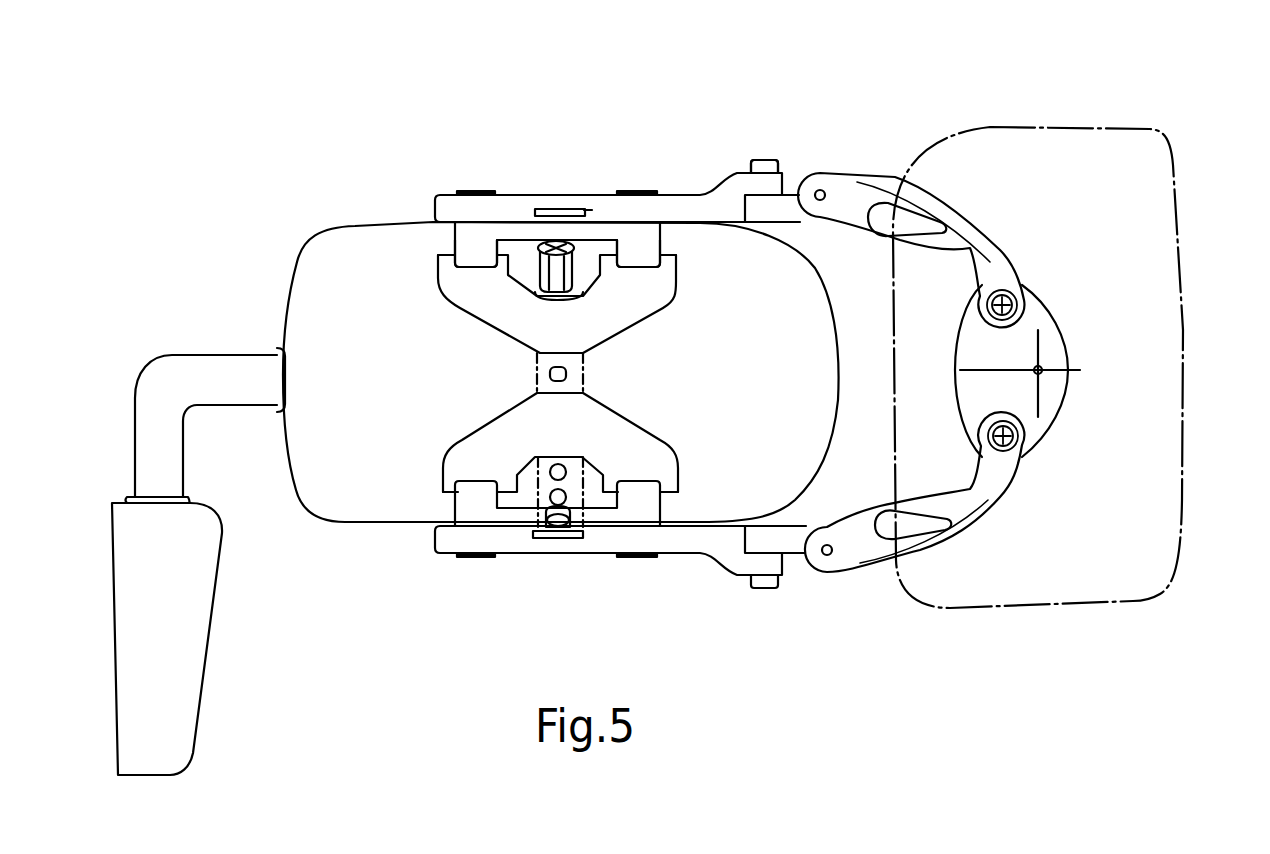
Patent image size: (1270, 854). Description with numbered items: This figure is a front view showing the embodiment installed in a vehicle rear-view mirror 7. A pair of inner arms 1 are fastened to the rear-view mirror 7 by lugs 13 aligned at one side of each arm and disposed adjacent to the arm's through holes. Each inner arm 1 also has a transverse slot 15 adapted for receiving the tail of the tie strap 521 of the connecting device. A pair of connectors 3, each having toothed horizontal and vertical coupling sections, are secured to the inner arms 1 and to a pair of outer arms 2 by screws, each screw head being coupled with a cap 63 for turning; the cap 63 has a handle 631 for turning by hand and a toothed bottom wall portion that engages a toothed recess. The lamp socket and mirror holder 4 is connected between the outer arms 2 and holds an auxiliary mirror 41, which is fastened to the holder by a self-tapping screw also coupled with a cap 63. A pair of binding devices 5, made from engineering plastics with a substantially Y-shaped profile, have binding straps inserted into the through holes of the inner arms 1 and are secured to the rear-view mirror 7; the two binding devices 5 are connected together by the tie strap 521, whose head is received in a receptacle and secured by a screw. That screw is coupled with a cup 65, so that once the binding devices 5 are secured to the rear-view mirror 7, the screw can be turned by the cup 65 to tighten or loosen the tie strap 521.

The inner arm 1 is at (510, 207).
The lug 13 is at (469, 242).
The transverse slot 15 is at (553, 208).
The cup 65 is at (588, 210).
The cap 63 is at (768, 337).
The handle 631 is at (759, 159).
The connector 3 is at (795, 185).
The outer arm 2 is at (840, 193).
The lamp socket and mirror holder 4 is at (1050, 343).
The auxiliary mirror 41 is at (1082, 137).
The binding device 5 is at (630, 308).
The tie strap 521 is at (573, 363).
The rear-view mirror 7 is at (302, 285).